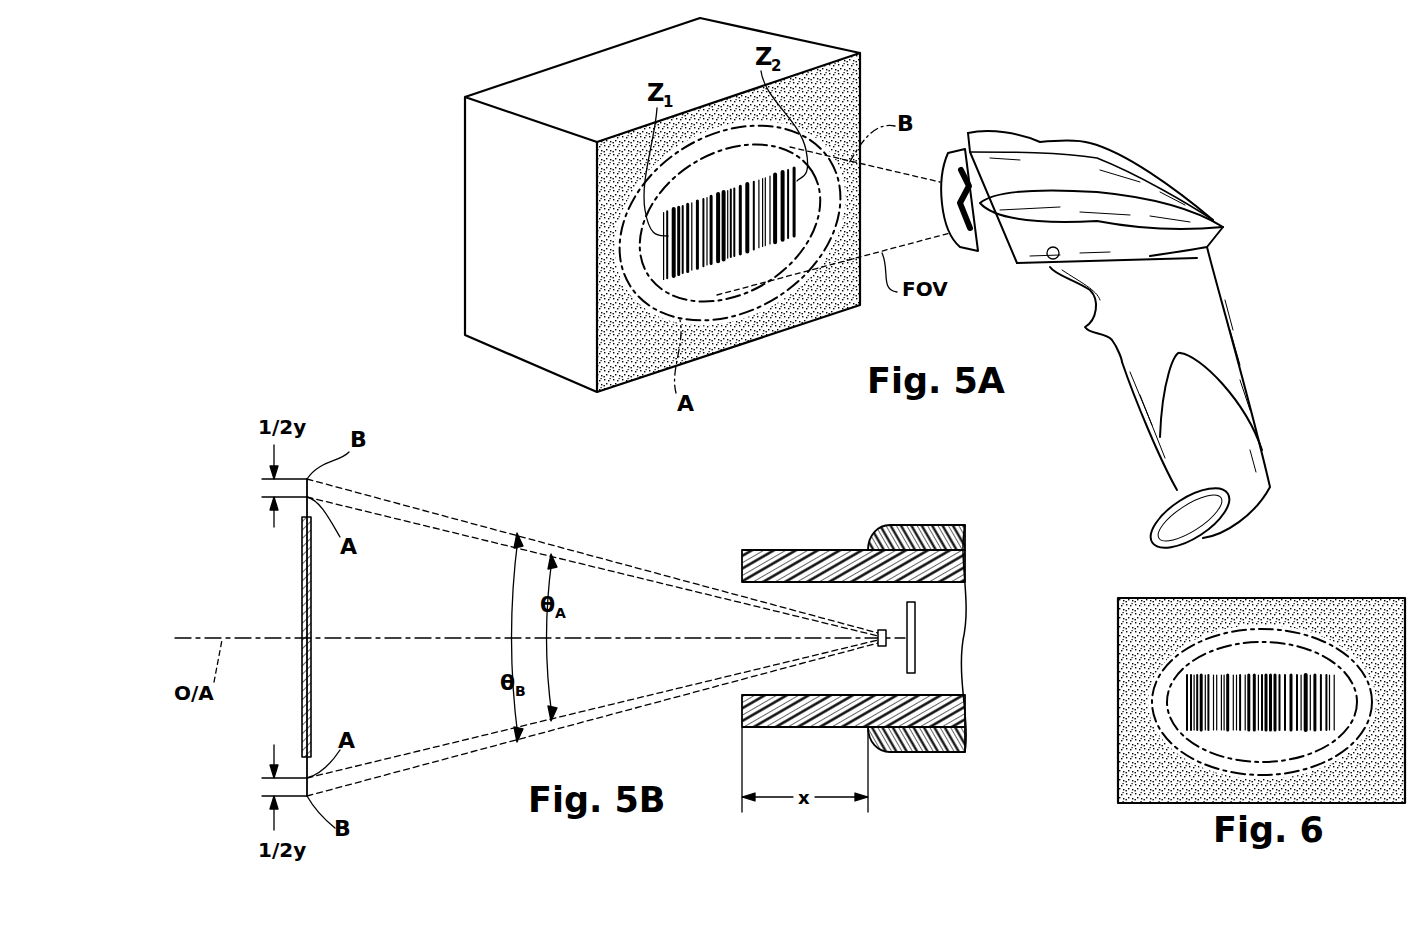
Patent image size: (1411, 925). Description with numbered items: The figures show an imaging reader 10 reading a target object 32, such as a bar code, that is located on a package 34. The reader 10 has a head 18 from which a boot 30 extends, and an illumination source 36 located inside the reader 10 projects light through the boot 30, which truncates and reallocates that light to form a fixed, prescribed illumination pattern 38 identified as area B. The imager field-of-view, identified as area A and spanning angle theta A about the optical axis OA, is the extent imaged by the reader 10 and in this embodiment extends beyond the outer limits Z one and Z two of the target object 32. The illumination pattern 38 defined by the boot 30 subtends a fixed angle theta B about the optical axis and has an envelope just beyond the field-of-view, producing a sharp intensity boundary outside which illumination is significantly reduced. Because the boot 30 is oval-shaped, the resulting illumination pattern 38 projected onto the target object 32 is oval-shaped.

In FIG. 5B, the imaging reader 10 is at (830, 496).
In FIG. 5B, the head 18 is at (937, 535).
In FIG. 5A, the boot 30 is at (983, 243).
In FIG. 5B, the boot 30 is at (762, 549).
In FIG. 5A, the target object 32 is at (722, 238).
In FIG. 5B, the target object 32 is at (312, 702).
In FIG. 5A, the package 34 is at (640, 380).
In FIG. 5B, the illumination source 36 is at (916, 640).
In FIG. 5A, the illumination pattern 38 is at (650, 295).